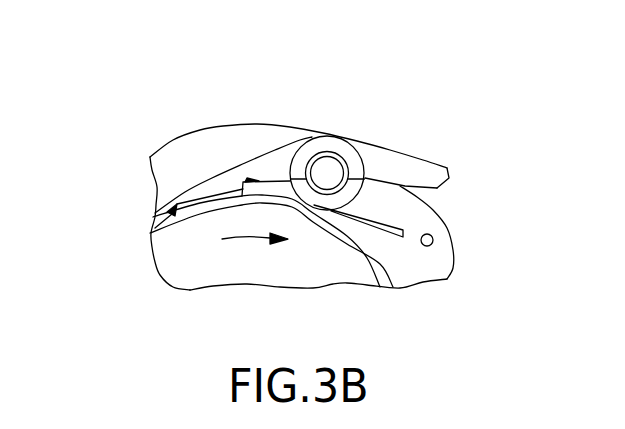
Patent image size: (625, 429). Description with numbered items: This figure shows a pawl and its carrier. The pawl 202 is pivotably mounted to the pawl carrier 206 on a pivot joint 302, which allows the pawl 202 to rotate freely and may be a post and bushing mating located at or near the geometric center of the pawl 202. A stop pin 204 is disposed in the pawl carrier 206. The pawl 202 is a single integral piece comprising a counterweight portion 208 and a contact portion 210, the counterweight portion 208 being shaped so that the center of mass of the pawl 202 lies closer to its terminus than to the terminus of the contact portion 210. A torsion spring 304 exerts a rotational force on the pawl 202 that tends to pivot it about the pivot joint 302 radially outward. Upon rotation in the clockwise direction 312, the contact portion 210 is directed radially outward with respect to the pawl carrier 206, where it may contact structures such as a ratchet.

The pawl 202 is at (392, 157).
The stop pin 204 is at (433, 240).
The pawl carrier 206 is at (167, 160).
The counterweight portion 208 is at (207, 192).
The contact portion 210 is at (431, 170).
The pivot joint 302 is at (324, 166).
The torsion spring 304 is at (380, 221).
The clockwise direction 312 is at (240, 238).